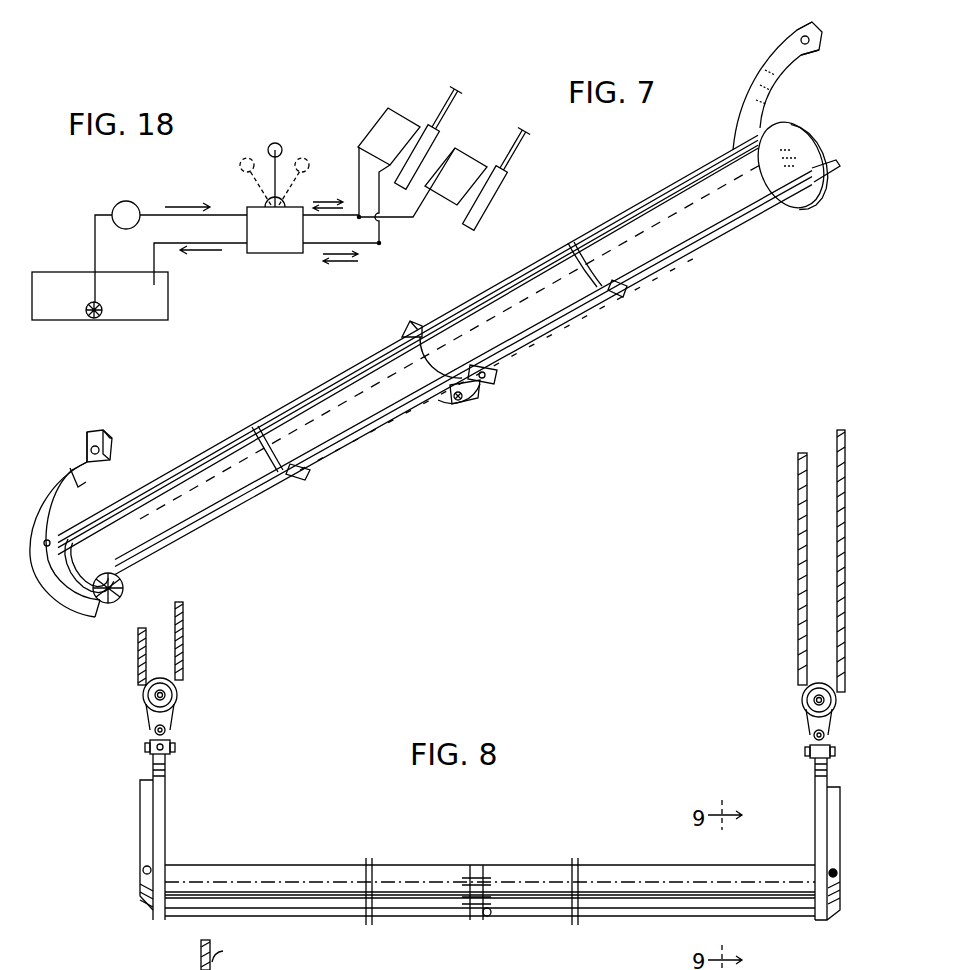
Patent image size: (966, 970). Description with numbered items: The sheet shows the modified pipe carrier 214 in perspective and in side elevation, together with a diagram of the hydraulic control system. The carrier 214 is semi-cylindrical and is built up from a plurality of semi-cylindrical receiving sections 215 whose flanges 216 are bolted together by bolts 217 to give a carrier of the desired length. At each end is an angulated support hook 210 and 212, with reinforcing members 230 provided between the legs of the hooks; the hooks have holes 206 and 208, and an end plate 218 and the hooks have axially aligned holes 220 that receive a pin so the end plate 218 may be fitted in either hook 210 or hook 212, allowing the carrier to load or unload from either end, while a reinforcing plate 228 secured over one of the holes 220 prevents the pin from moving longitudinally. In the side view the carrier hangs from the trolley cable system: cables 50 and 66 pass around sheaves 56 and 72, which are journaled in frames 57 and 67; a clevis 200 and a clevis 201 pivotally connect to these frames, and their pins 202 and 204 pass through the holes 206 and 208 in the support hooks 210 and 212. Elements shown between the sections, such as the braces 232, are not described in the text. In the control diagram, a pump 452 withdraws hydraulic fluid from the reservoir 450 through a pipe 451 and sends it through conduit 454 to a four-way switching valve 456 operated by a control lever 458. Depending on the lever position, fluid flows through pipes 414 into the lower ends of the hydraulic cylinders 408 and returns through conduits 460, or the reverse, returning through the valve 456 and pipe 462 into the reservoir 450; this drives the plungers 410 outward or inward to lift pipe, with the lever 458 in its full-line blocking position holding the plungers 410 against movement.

In FIG. 18, the reservoir 450 is at (138, 321).
In FIG. 18, the pipe 451 is at (95, 248).
In FIG. 18, the pump 452 is at (124, 201).
In FIG. 18, the conduit 454 is at (224, 214).
In FIG. 18, the four-way switching valve 456 is at (272, 252).
In FIG. 18, the control lever 458 is at (280, 144).
In FIG. 18, the pipe 462 is at (232, 246).
In FIG. 18, the hydraulic cylinder 408 is at (396, 132).
In FIG. 18, the plunger 410 is at (462, 112).
In FIG. 18, the pipe 414 is at (388, 160).
In FIG. 18, the conduit 460 is at (484, 164).
In FIG. 7, the hole 206 is at (796, 42).
In FIG. 7, the hole 208 is at (86, 440).
In FIG. 7, the support hook 210 is at (746, 108).
In FIG. 8, the support hook 210 is at (815, 802).
In FIG. 7, the support hook 212 is at (68, 510).
In FIG. 8, the support hook 212 is at (152, 770).
In FIG. 7, the pipe carrier 214 is at (615, 316).
In FIG. 8, the pipe carrier 214 is at (256, 854).
In FIG. 7, the section 215 is at (668, 268).
In FIG. 8, the section 215 is at (322, 870).
In FIG. 7, the flange 216 is at (496, 378).
In FIG. 8, the flange 216 is at (476, 862).
In FIG. 7, the bolt 217 is at (476, 382).
In FIG. 8, the bolt 217 is at (484, 921).
In FIG. 7, the end plate 218 is at (788, 130).
In FIG. 7, the hole 220 is at (78, 600).
In FIG. 8, the hole 220 is at (141, 871).
In FIG. 8, the cable 66 is at (183, 636).
In FIG. 8, the sheave 72 is at (178, 692).
In FIG. 8, the frame 67 is at (172, 716).
In FIG. 8, the pin 204 is at (146, 752).
In FIG. 8, the clevis 201 is at (176, 748).
In FIG. 8, the cross brace 232 is at (376, 925).
In FIG. 8, the cable 50 is at (798, 604).
In FIG. 8, the sheave 56 is at (812, 692).
In FIG. 8, the frame 57 is at (814, 716).
In FIG. 8, the pin 202 is at (808, 750).
In FIG. 8, the clevis 200 is at (835, 750).
In FIG. 8, the reinforcing plate 228 is at (832, 840).
In FIG. 8, the reinforcing member 230 is at (834, 922).